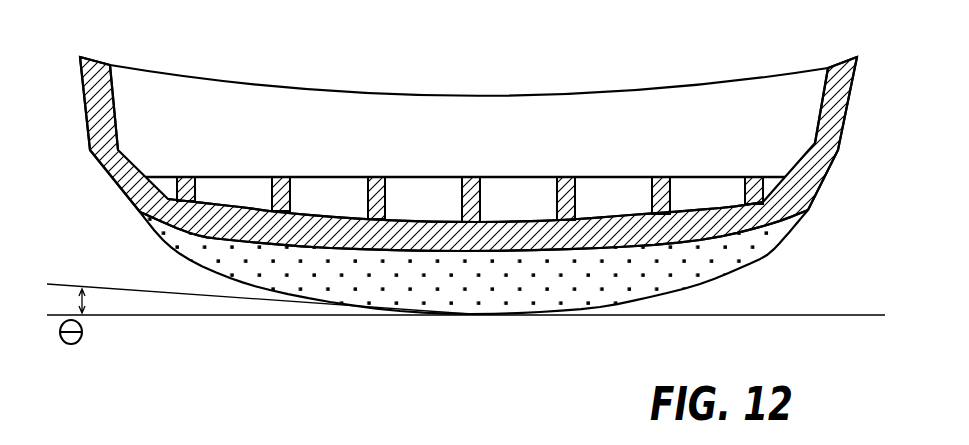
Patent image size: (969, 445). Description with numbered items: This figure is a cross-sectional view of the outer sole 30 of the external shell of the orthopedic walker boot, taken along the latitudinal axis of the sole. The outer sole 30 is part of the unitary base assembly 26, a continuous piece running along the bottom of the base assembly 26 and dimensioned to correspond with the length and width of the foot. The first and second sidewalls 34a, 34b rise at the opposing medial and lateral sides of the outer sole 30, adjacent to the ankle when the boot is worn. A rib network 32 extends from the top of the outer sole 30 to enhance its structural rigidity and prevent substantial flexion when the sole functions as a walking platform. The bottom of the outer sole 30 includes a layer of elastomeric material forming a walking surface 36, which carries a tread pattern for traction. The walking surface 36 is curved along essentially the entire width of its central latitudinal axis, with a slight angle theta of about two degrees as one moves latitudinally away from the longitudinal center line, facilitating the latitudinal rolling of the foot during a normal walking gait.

The base assembly 26 is at (855, 174).
The outer sole 30 is at (694, 228).
The rib network 32 is at (581, 200).
The first sidewall 34a is at (847, 99).
The second sidewall 34b is at (87, 127).
The walking surface 36 is at (705, 284).